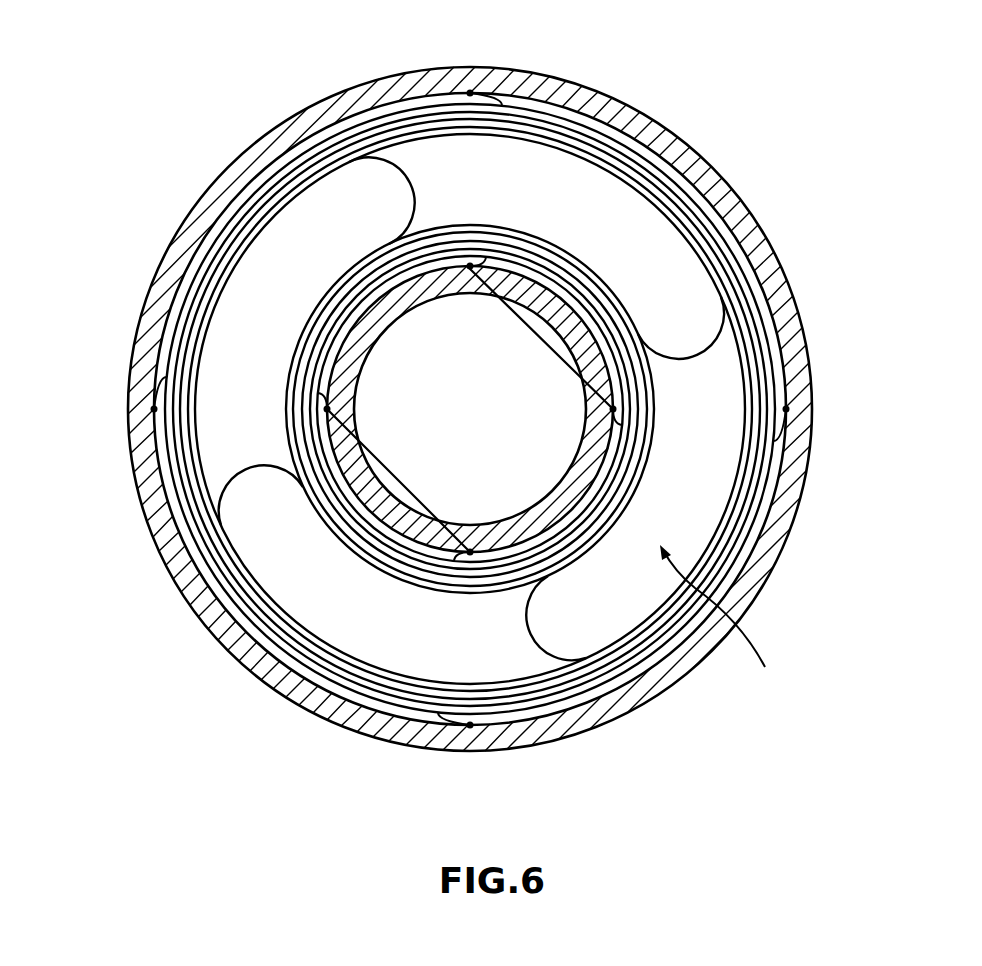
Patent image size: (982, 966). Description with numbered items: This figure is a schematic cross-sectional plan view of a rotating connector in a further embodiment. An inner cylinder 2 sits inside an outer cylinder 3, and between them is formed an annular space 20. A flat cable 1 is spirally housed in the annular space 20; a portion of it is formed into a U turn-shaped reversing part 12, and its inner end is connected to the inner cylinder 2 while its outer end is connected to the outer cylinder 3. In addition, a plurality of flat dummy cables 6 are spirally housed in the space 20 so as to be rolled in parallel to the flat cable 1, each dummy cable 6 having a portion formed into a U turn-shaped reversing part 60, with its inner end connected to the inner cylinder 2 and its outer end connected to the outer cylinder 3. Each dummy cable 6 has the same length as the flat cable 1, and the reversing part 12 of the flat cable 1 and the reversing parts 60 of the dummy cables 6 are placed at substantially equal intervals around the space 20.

The flat cable 1 is at (510, 104).
The inner cylinder 2 is at (550, 328).
The outer cylinder 3 is at (717, 163).
The flat dummy cable 6 is at (225, 287).
The U turn-shaped reversing part 12 is at (690, 357).
The annular space 20 is at (721, 625).
The U turn-shaped reversing part 60 is at (415, 183).